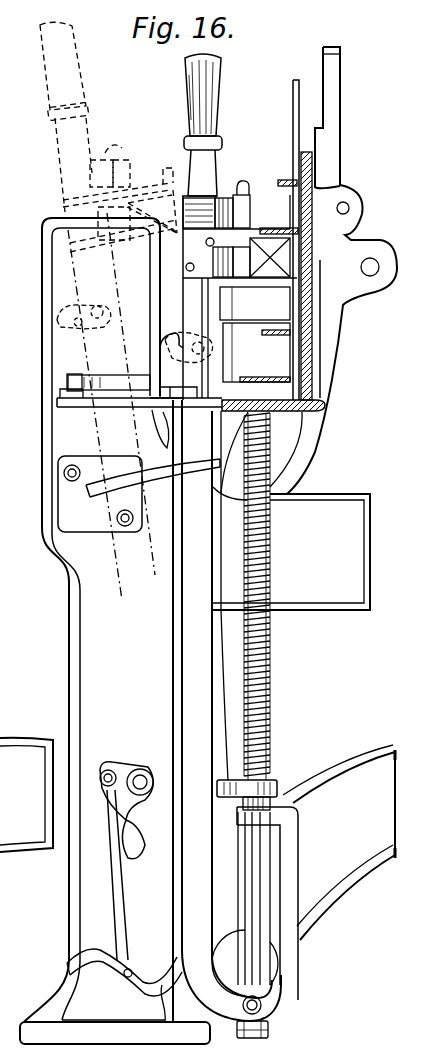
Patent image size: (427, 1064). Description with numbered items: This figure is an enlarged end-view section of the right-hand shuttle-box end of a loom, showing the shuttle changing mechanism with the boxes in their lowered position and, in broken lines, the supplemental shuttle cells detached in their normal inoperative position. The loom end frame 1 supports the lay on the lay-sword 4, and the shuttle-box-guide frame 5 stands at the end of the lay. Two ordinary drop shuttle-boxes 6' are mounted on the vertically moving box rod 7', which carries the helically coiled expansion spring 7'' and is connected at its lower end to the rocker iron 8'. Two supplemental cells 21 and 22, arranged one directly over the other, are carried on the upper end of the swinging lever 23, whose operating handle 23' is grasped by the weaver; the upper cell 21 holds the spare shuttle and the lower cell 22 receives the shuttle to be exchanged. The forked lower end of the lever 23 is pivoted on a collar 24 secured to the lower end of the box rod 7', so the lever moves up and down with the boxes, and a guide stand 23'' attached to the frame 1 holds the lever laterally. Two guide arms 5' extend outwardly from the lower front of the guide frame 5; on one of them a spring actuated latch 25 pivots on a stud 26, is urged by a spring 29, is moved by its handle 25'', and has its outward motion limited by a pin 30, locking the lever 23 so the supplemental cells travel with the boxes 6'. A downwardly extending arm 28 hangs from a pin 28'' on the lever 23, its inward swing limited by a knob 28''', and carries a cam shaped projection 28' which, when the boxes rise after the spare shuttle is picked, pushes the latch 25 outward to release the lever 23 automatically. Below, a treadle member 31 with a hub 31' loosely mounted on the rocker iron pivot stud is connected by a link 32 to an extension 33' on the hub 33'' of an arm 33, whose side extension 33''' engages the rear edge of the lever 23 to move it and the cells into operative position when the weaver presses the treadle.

The loom side or end frame 1 is at (355, 533).
The lay-sword 4 is at (293, 473).
The shuttle-box-guide frame 5 is at (303, 245).
The guide arm 5' is at (139, 418).
The ordinary change or drop shuttle-box 6' is at (255, 334).
The vertically moving box rod 7' is at (287, 898).
The helically coiled expansion spring 7'' is at (263, 704).
The rocker iron 8' is at (286, 903).
The supplemental shuttle-box or cell 21 is at (180, 198).
The supplemental shuttle-box or cell 22 is at (240, 268).
The swinging lever 23 is at (174, 617).
The operating handle 23' is at (132, 125).
The guide stand 23'' is at (139, 494).
The collar 24 is at (266, 1021).
The spring actuated latch 25 is at (183, 381).
The handle 25'' is at (42, 413).
The stud 26 is at (66, 383).
The downwardly extending arm 28 is at (150, 359).
The cam shaped projection 28' is at (142, 431).
The pin or stud 28'' is at (187, 335).
The knob or projection 28''' is at (111, 325).
The spring 29 is at (98, 384).
The pin 30 is at (150, 400).
The treadle mechanism arm 31 is at (98, 967).
The hub 31' is at (245, 956).
The link 32 is at (118, 880).
The arm 33 is at (133, 791).
The extension 33' is at (103, 757).
The hub 33'' is at (140, 761).
The side extension 33''' is at (150, 839).